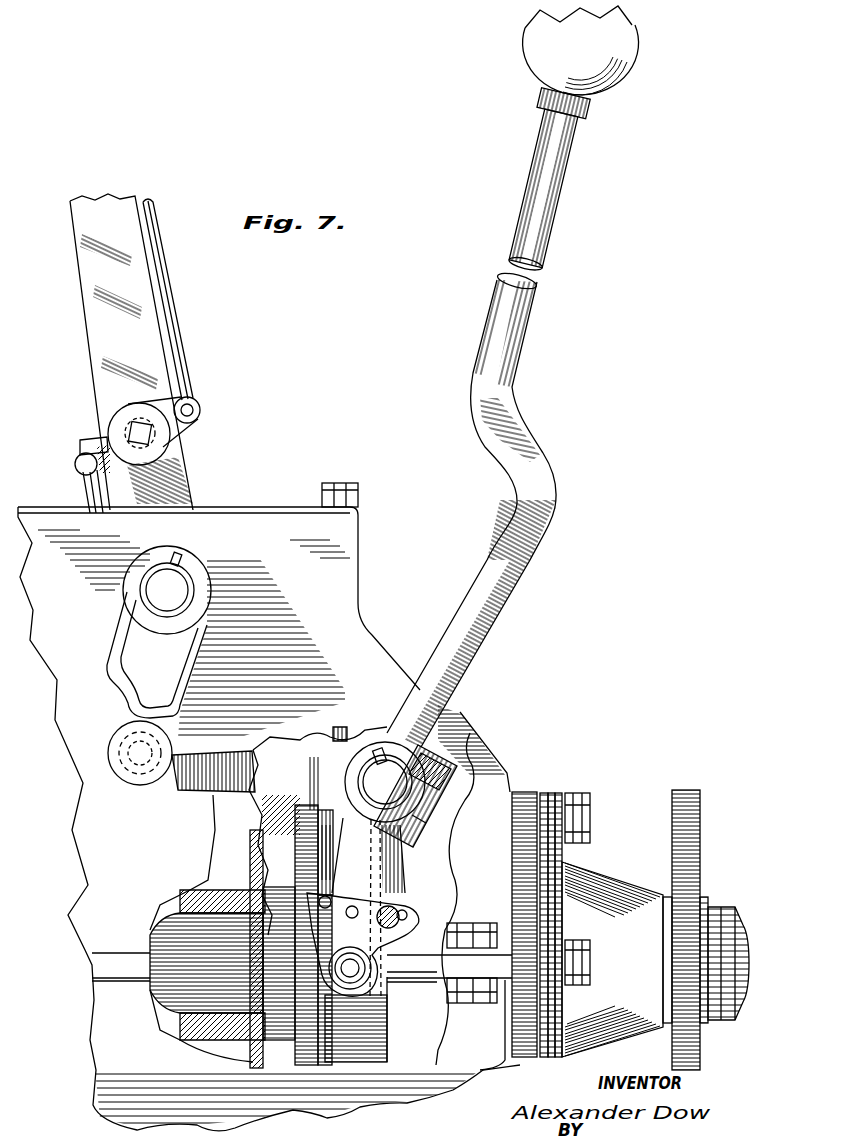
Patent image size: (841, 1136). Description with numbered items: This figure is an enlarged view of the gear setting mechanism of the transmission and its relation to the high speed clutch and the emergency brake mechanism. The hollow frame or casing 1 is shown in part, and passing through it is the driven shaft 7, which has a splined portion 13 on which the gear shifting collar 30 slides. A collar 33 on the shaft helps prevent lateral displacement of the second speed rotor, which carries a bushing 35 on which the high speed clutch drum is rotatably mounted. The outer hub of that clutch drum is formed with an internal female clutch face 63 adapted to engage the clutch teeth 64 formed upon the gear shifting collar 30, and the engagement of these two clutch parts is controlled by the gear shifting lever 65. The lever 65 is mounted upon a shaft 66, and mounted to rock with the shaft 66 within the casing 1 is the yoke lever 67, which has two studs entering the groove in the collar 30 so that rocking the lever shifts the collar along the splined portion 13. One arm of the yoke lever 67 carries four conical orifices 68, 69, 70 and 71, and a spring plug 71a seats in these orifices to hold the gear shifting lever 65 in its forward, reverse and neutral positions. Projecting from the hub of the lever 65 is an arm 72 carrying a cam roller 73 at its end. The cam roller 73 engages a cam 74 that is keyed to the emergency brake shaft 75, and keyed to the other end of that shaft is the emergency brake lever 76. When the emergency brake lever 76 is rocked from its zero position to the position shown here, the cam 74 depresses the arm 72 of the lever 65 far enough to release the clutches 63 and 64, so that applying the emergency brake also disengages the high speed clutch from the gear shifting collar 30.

The frame or casing 1 is at (383, 807).
The shaft 7 is at (432, 1032).
The splined portion 13 is at (449, 964).
The gear shifting collar 30 is at (375, 1030).
The collar 33 is at (270, 922).
The bushing 35 is at (190, 905).
The internal female clutch face 63 is at (263, 810).
The clutch teeth 64 is at (283, 850).
The gear shifting lever 65 is at (548, 503).
The shaft 66 is at (378, 778).
The yoke lever 67 is at (397, 862).
The conical orifice 68 is at (329, 898).
The conical orifice 69 is at (356, 910).
The conical orifice 70 is at (396, 915).
The conical orifice 71 is at (451, 905).
The spring plug 71a is at (447, 935).
The arm 72 is at (195, 775).
The cam roller 73 is at (136, 772).
The cam 74 is at (122, 688).
The emergency brake shaft 75 is at (175, 580).
The emergency brake lever 76 is at (98, 340).